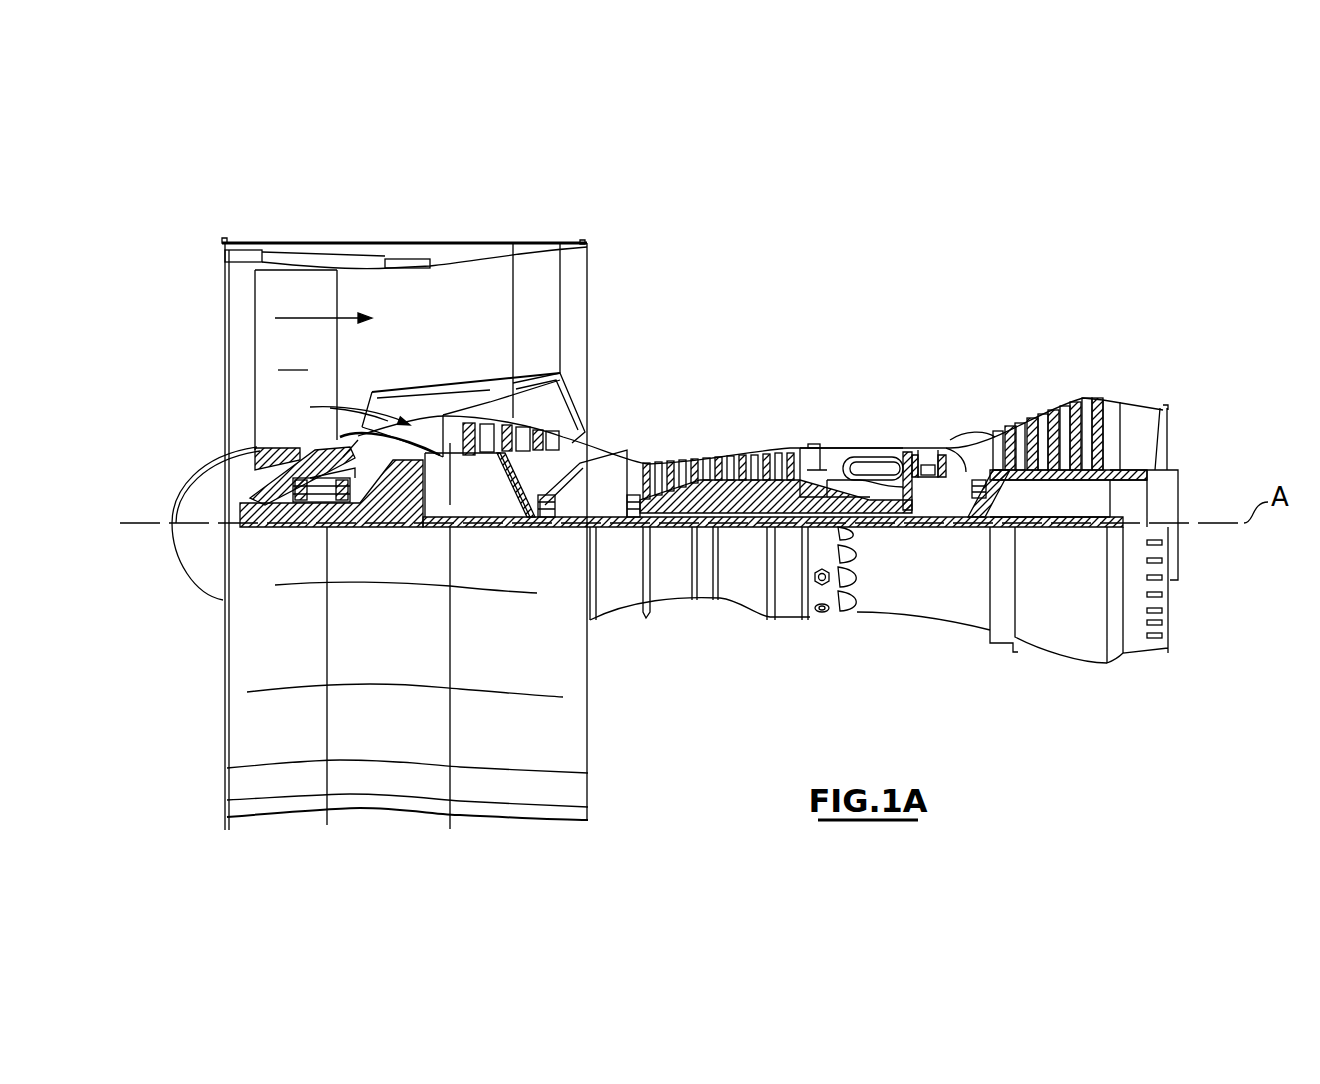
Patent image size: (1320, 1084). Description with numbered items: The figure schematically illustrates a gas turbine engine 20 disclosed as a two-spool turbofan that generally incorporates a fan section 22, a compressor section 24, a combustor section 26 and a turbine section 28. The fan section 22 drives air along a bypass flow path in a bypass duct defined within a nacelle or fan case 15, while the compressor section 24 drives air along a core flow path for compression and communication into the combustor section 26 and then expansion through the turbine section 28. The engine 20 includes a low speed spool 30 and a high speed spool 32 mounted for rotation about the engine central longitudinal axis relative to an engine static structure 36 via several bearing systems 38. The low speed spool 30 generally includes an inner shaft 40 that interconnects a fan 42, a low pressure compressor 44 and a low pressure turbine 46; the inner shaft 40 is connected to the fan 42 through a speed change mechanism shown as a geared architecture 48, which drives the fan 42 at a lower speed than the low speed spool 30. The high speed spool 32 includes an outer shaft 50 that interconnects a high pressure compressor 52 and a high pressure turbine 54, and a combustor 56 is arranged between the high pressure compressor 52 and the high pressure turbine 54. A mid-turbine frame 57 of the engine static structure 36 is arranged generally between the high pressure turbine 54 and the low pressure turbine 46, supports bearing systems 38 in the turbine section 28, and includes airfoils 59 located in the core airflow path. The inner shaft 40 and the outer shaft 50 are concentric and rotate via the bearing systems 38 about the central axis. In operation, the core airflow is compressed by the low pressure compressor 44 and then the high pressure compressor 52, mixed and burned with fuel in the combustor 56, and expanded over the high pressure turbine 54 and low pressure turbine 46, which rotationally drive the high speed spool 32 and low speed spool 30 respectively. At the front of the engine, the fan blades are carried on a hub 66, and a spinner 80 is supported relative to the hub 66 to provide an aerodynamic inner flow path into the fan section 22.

The nacelle or fan case 15 is at (407, 243).
The gas turbine engine 20 is at (868, 292).
The fan section 22 is at (338, 232).
The compressor section 24 is at (636, 433).
The combustor section 26 is at (866, 412).
The turbine section 28 is at (1015, 383).
The low speed spool 30 is at (745, 540).
The high speed spool 32 is at (791, 473).
The engine static structure 36 is at (785, 622).
The bearing systems 38 is at (552, 502).
The inner shaft 40 is at (600, 530).
The fan 42 is at (407, 536).
The low pressure compressor 44 is at (507, 437).
The low pressure turbine 46 is at (1054, 405).
The geared architecture 48 is at (415, 512).
The outer shaft 50 is at (872, 507).
The high pressure compressor 52 is at (723, 497).
The high pressure turbine 54 is at (930, 445).
The combustor 56 is at (860, 468).
The mid-turbine frame 57 is at (952, 435).
The airfoils 59 is at (970, 460).
The hub 66 is at (252, 488).
The spinner 80 is at (172, 512).